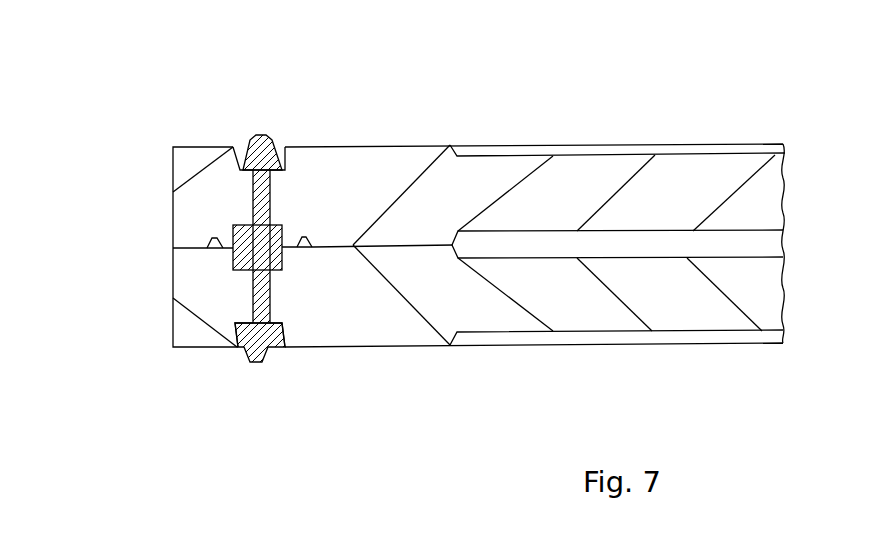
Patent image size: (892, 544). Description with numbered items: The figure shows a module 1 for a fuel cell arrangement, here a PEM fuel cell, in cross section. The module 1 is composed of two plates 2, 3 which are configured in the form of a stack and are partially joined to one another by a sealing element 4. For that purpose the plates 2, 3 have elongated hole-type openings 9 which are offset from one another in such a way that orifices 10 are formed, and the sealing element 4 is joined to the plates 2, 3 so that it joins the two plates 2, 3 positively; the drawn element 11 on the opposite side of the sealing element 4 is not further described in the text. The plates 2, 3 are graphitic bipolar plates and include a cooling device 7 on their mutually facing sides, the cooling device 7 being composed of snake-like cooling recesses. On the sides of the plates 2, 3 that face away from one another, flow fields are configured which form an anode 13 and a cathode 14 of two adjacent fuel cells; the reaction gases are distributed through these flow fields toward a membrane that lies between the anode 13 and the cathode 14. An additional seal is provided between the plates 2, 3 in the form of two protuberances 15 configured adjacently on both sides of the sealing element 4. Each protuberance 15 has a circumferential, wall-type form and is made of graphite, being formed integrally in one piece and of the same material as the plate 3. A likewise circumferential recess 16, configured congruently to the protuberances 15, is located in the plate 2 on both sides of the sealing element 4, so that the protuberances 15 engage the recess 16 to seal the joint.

The module 1 is at (120, 369).
The plate 2 is at (380, 162).
The plate 3 is at (400, 332).
The sealing element 4 is at (252, 362).
The cooling device 7 is at (707, 248).
The elongated hole-type openings 9 is at (270, 235).
The orifices 10 is at (242, 148).
The lower sealing lip 11 is at (257, 150).
The anode 13 is at (605, 145).
The cathode 14 is at (630, 338).
The protuberances 15 is at (225, 245).
The recess 16 is at (215, 238).